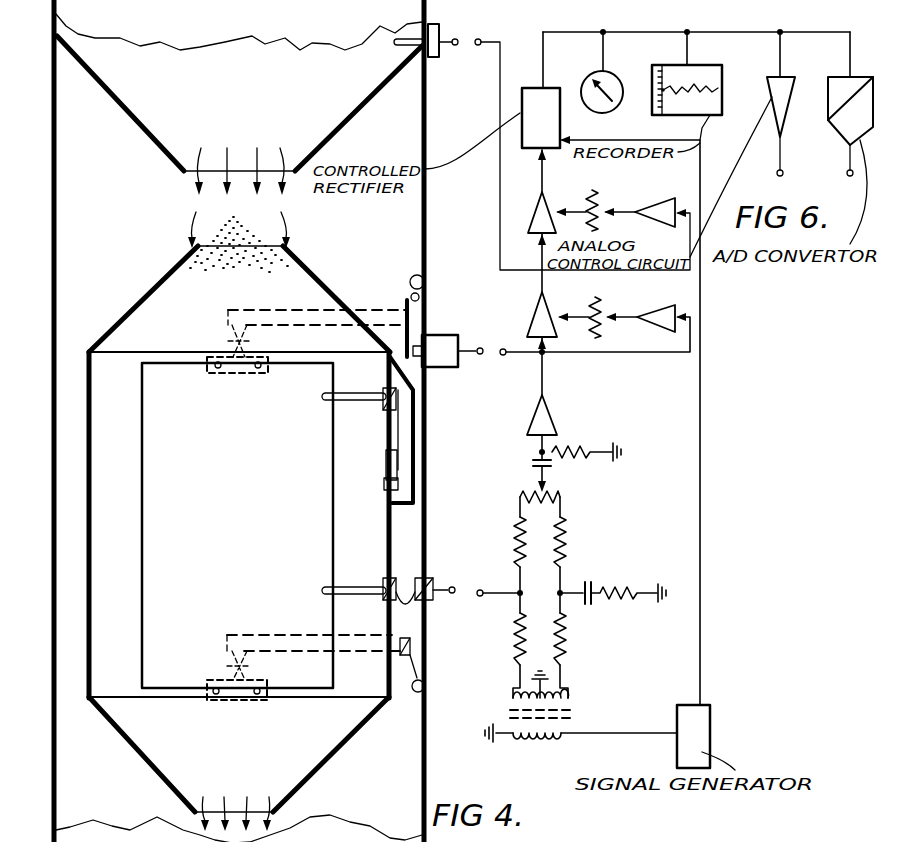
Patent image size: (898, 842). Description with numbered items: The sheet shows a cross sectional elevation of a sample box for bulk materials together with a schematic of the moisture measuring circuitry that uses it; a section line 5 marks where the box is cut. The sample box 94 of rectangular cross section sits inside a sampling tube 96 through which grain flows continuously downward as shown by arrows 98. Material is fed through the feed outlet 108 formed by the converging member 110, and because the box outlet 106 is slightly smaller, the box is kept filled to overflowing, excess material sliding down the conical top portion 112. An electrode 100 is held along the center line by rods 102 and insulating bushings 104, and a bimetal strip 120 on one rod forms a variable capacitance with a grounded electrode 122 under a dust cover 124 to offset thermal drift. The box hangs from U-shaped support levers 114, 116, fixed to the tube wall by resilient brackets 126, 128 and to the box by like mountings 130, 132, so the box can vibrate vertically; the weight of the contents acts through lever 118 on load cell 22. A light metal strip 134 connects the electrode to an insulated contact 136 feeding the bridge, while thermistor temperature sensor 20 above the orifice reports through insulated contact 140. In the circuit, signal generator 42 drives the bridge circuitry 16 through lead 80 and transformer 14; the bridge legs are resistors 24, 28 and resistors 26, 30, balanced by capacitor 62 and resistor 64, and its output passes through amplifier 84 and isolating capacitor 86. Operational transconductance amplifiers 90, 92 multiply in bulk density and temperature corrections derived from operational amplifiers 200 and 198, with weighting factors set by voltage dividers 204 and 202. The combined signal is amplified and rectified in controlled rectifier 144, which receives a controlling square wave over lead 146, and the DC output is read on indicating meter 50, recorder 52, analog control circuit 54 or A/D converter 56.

In FIG. 4, the section line 5- 5 is at (28, 560).
In FIG. 6, the transformer 14 is at (579, 722).
In FIG. 6, the bridge circuitry 16 is at (508, 602).
In FIG. 4, the temperature sensor 20 is at (403, 31).
In FIG. 4, the load cell 22 is at (484, 398).
In FIG. 6, the resistor 24 is at (518, 655).
In FIG. 6, the resistor 26 is at (517, 553).
In FIG. 6, the resistor 28 is at (563, 657).
In FIG. 6, the resistor 30 is at (563, 553).
In FIG. 6, the signal generator 42 is at (706, 753).
In FIG. 6, the indicating meter 50 is at (585, 107).
In FIG. 6, the recorder 52 is at (706, 115).
In FIG. 6, the analog control circuit 54 is at (776, 97).
In FIG. 6, the A/D converter 56 is at (833, 121).
In FIG. 6, the capacitor 62 is at (580, 590).
In FIG. 6, the resistor 64 is at (613, 598).
In FIG. 6, the lead 80 is at (597, 736).
In FIG. 6, the amplifier 84 is at (530, 429).
In FIG. 6, the capacitor 86 is at (546, 466).
In FIG. 6, the operational transconductance amplifier 90 is at (530, 327).
In FIG. 6, the operational transconductance amplifier 92 is at (537, 215).
In FIG. 4, the sample box 94 is at (237, 522).
In FIG. 4, the sampling tube 96 is at (57, 212).
In FIG. 4, the arrows 98 is at (291, 199).
In FIG. 4, the electrode 100 is at (226, 518).
In FIG. 4, the rods 102 is at (358, 398).
In FIG. 4, the insulating bushings 104 is at (388, 394).
In FIG. 4, the outlet 106 is at (283, 816).
In FIG. 4, the material feed outlet 108 is at (212, 168).
In FIG. 4, the converging member 110 is at (376, 98).
In FIG. 4, the conical top portion 112 is at (121, 312).
In FIG. 4, the U-shaped support lever 114 is at (365, 320).
In FIG. 4, the U-shaped support lever 116 is at (348, 644).
In FIG. 4, the lever 118 is at (409, 333).
In FIG. 4, the bimetal strip 120 is at (397, 428).
In FIG. 4, the grounded electrode 122 is at (386, 463).
In FIG. 4, the dust cover 124 is at (414, 438).
In FIG. 4, the bracket 126 is at (412, 300).
In FIG. 4, the bracket 128 is at (415, 663).
In FIG. 4, the mounting 130 is at (236, 342).
In FIG. 4, the mounting 132 is at (234, 669).
In FIG. 4, the light metal strip 134 is at (400, 605).
In FIG. 4, the insulated contact 136 is at (463, 600).
In FIG. 4, the insulated contact 140 is at (461, 58).
In FIG. 6, the controlled rectifier 144 is at (556, 133).
In FIG. 6, the lead 146 is at (703, 468).
In FIG. 6, the operational amplifier 198 is at (648, 214).
In FIG. 6, the operational amplifier 200 is at (648, 323).
In FIG. 6, the voltage divider 202 is at (598, 201).
In FIG. 6, the voltage divider 204 is at (602, 311).